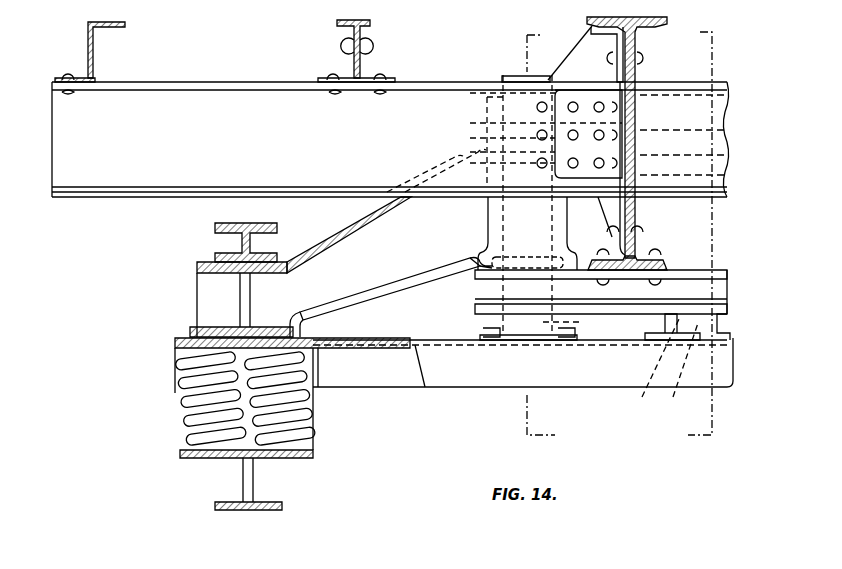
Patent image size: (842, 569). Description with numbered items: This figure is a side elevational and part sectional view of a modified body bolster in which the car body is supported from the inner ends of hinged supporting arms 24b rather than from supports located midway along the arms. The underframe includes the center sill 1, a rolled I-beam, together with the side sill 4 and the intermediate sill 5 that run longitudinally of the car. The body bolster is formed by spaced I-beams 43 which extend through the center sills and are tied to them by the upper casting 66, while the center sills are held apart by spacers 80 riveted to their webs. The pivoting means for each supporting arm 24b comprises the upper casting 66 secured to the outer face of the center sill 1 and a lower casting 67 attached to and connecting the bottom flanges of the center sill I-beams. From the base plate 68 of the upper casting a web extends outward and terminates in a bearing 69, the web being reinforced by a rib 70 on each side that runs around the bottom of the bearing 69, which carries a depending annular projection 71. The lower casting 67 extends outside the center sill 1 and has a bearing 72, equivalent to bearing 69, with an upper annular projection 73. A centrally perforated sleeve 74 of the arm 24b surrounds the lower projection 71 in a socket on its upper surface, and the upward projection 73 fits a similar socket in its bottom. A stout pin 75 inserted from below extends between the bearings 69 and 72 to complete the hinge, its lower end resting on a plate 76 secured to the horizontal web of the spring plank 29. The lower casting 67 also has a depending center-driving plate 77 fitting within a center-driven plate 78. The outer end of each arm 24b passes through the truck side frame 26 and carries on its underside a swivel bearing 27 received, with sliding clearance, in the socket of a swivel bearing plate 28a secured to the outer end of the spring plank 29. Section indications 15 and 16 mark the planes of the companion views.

The center sill 1 is at (655, 31).
The side sill 4 is at (88, 52).
The intermediate sill 5 is at (352, 28).
The section line 15 is at (688, 235).
The section line 16 is at (553, 235).
The hinged supporting arm 24b is at (370, 270).
The truck side frame 26 is at (215, 225).
The swivel bearing 27 is at (216, 325).
The swivel bearing plate 28a is at (175, 340).
The spring plank 29 is at (463, 374).
The body bolster I-beam 43 is at (390, 135).
The upper casting 66 is at (615, 54).
The lower casting 67 is at (693, 272).
The base plate 68 is at (640, 72).
The bearing 69 is at (487, 107).
The rib 70 is at (487, 130).
The depending annular projection 71 is at (470, 153).
The bearing 72 is at (494, 289).
The upper annular projection 73 is at (492, 261).
The centrally perforated sleeve 74 is at (490, 213).
The pin 75 is at (516, 77).
The plate 76 is at (480, 333).
The center-driving plate 77 is at (652, 366).
The center-driven plate 78 is at (683, 369).
The spacer 80 is at (686, 135).